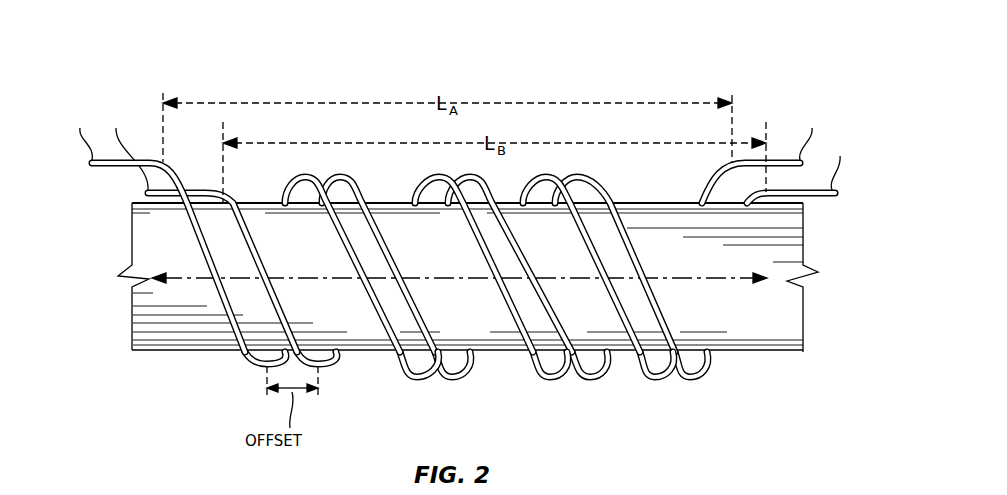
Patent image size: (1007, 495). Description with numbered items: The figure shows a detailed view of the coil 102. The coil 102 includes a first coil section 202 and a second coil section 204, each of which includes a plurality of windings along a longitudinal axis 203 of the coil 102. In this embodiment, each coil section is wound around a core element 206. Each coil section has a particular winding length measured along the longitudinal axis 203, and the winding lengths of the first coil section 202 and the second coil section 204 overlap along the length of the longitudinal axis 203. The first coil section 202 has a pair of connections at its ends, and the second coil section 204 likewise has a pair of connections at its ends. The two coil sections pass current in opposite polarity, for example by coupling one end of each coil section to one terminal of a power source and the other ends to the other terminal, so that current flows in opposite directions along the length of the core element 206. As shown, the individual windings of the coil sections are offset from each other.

The coil 102 is at (463, 225).
The first coil section 202 is at (417, 380).
The longitudinal axis 203 is at (701, 282).
The second coil section 204 is at (588, 380).
The core element 206 is at (220, 353).